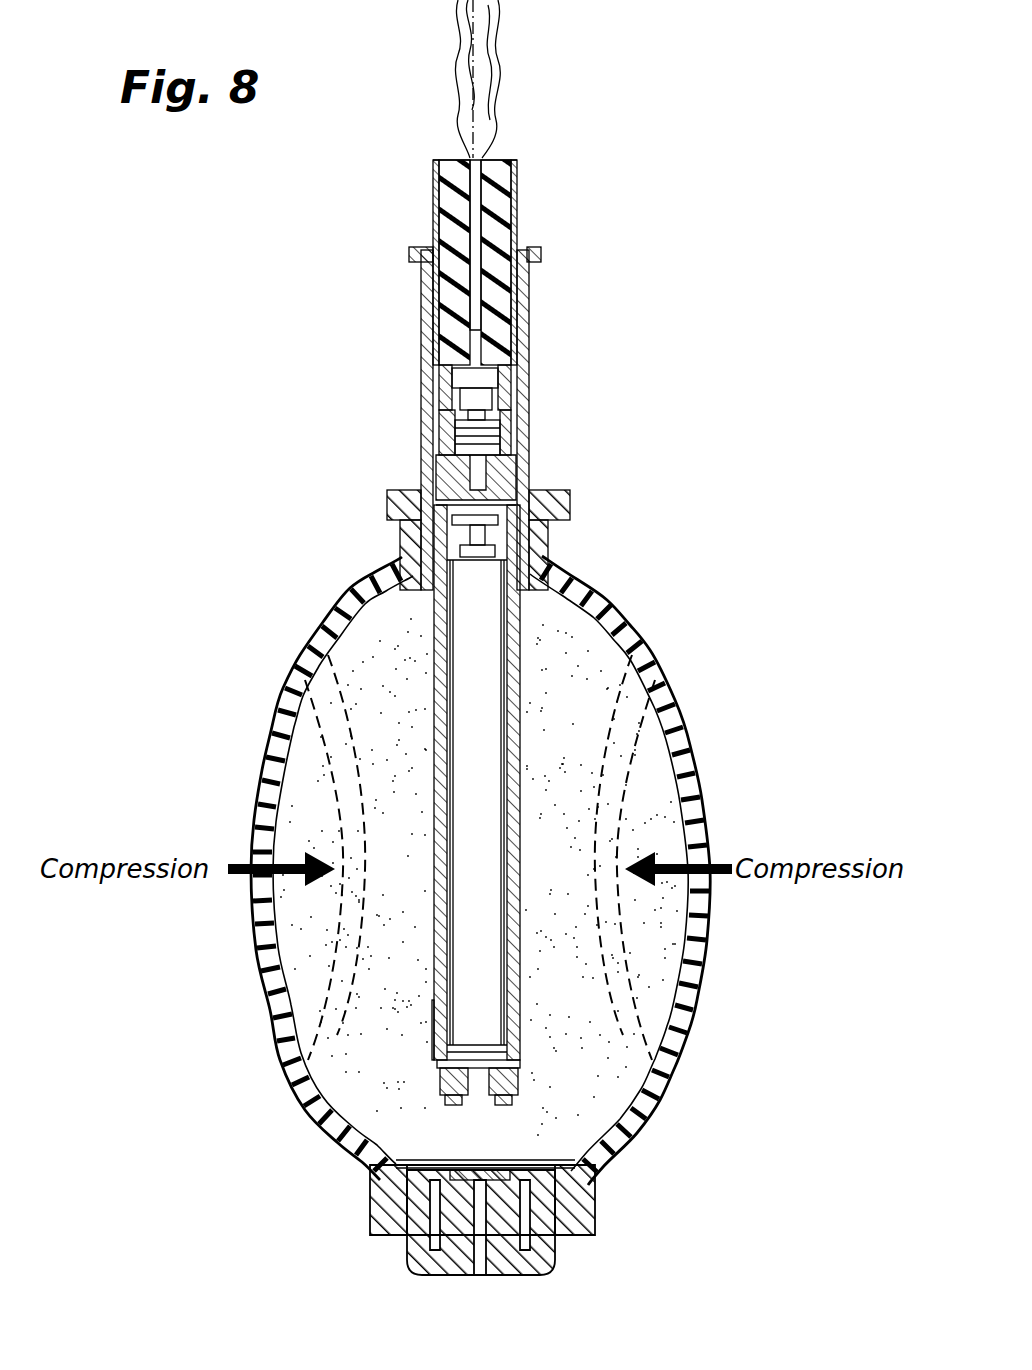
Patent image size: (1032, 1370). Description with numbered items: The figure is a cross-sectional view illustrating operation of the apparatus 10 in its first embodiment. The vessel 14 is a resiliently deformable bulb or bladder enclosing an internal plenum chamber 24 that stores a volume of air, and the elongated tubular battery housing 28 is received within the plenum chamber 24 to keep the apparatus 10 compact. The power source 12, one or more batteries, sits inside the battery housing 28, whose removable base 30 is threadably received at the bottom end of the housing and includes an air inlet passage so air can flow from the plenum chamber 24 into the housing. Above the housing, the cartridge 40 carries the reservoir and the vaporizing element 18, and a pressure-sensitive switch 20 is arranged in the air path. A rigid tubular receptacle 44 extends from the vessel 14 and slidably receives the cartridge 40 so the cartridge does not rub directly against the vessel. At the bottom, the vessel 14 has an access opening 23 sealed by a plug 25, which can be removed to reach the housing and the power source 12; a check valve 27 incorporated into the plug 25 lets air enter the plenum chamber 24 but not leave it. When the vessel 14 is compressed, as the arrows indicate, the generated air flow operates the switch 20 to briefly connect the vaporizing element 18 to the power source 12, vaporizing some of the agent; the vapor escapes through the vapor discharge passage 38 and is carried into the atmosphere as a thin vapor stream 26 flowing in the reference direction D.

The apparatus 10 is at (227, 400).
The power source 12 is at (465, 824).
The vessel 14 is at (617, 603).
The vaporizing element 18 is at (436, 372).
The switch 20 is at (448, 512).
The access opening 23 is at (440, 1198).
The plenum chamber 24 is at (375, 724).
The plug 25 is at (560, 1255).
The vapor stream 26 is at (512, 100).
The check valve 27 is at (478, 1262).
The battery housing 28 is at (432, 1028).
The base 30 is at (500, 1090).
The vapor discharge passage 38 is at (476, 230).
The cartridge 40 is at (519, 212).
The receptacle 44 is at (531, 305).
The reference direction D is at (475, 82).